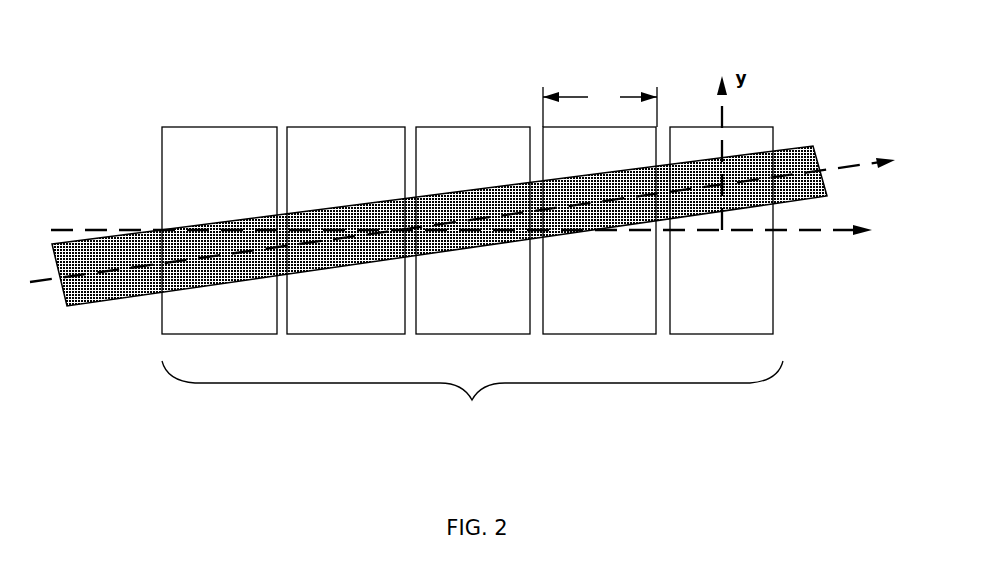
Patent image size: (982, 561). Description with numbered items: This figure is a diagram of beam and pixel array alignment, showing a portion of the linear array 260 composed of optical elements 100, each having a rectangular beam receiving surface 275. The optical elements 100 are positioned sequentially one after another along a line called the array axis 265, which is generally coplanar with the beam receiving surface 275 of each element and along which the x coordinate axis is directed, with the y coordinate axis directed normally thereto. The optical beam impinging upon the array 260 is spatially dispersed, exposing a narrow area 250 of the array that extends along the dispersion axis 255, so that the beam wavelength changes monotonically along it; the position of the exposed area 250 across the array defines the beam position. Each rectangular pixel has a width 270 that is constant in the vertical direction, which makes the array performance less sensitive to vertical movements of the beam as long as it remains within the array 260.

The optical element 100 is at (235, 199).
The rectangular beam receiving surface 275 is at (249, 148).
The exposed area 250 is at (102, 297).
The dispersion axis 255 is at (860, 160).
The linear array 260 is at (472, 263).
The array axis 265 is at (820, 232).
The pixel width 270 is at (603, 85).